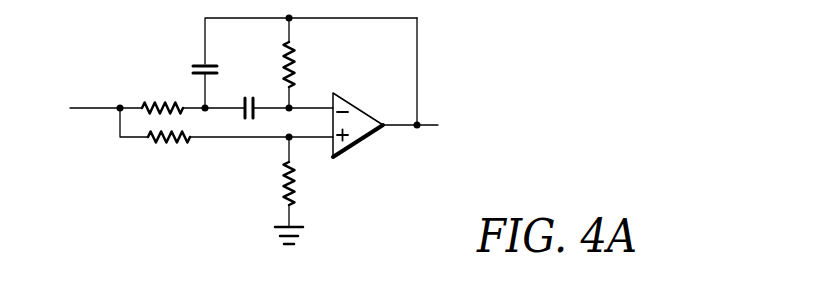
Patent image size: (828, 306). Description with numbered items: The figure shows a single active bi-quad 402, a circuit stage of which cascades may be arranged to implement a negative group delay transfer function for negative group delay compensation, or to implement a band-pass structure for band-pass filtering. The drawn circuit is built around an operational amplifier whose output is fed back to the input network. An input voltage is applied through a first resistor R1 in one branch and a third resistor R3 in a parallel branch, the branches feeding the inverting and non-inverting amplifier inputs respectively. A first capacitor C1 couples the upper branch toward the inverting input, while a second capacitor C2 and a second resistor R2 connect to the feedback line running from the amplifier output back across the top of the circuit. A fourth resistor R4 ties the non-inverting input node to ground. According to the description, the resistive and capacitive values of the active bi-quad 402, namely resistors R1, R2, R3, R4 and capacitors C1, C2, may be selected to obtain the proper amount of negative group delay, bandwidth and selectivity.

The active bi-quad 402 is at (302, 130).
The resistor R1 is at (162, 87).
The resistor R2 is at (304, 64).
The resistor R3 is at (169, 157).
The resistor R4 is at (304, 186).
The capacitor C1 is at (248, 88).
The capacitor C2 is at (197, 52).